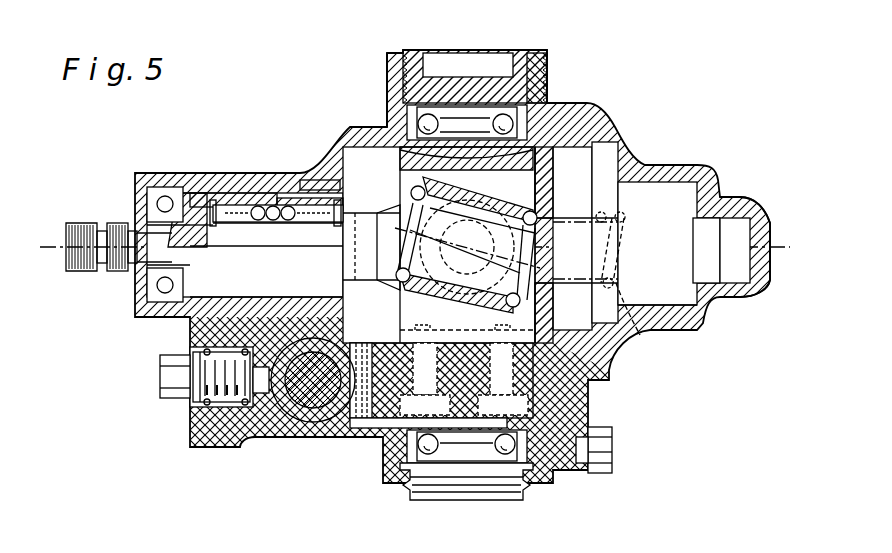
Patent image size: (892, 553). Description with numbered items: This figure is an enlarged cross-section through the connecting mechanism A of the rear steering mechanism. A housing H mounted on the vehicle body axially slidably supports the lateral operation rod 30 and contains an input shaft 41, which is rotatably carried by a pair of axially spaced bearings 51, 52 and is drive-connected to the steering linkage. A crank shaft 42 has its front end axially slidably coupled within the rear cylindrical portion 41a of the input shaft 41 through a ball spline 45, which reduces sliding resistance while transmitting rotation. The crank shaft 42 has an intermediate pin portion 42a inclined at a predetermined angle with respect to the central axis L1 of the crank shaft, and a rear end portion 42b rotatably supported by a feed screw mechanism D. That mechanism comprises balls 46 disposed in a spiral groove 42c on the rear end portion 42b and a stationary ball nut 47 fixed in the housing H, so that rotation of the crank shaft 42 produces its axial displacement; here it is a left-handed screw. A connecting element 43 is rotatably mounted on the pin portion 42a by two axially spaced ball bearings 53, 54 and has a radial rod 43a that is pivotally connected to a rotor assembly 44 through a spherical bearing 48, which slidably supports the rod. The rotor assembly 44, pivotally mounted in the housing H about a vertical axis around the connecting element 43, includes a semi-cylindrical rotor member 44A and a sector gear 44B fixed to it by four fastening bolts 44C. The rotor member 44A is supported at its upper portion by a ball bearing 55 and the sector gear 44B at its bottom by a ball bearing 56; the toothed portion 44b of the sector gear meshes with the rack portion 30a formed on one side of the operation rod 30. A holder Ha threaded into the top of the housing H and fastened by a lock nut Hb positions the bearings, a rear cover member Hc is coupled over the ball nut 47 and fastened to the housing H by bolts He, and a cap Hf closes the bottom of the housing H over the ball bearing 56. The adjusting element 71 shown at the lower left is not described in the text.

The operation rod 30 is at (310, 405).
The rack portion 30a is at (354, 420).
The input shaft 41 is at (102, 270).
The rear cylindrical portion 41a is at (222, 199).
The crank shaft 42 is at (311, 240).
The intermediate pin portion 42a is at (405, 296).
The rear end portion 42b is at (707, 226).
The spiral groove 42c is at (658, 300).
The connecting element 43 is at (492, 205).
The radial rod 43a is at (540, 302).
The rotor assembly 44 is at (536, 381).
The semi-cylindrical rotor member 44A is at (573, 118).
The sector gear 44B is at (538, 355).
The fastening bolts 44C is at (425, 331).
The toothed portion 44b is at (383, 422).
The ball spline 45 is at (273, 207).
The balls 46 is at (638, 336).
The stationary ball nut 47 is at (652, 193).
The spherical bearing 48 is at (398, 198).
The bearing 51 is at (163, 198).
The bearing 52 is at (318, 182).
The ball bearing 53 is at (412, 190).
The ball bearing 54 is at (535, 216).
The ball bearing 55 is at (512, 122).
The ball bearing 56 is at (506, 450).
The adjusting bolt and spring 71 is at (298, 392).
The connecting mechanism A is at (384, 64).
The feed screw mechanism D is at (670, 200).
The housing H is at (352, 126).
The holder Ha is at (527, 54).
The lock nut Hb is at (536, 58).
The rear cover member Hc is at (751, 299).
The bolts He is at (612, 450).
The cap Hf is at (515, 503).
The central axis L1 is at (781, 247).